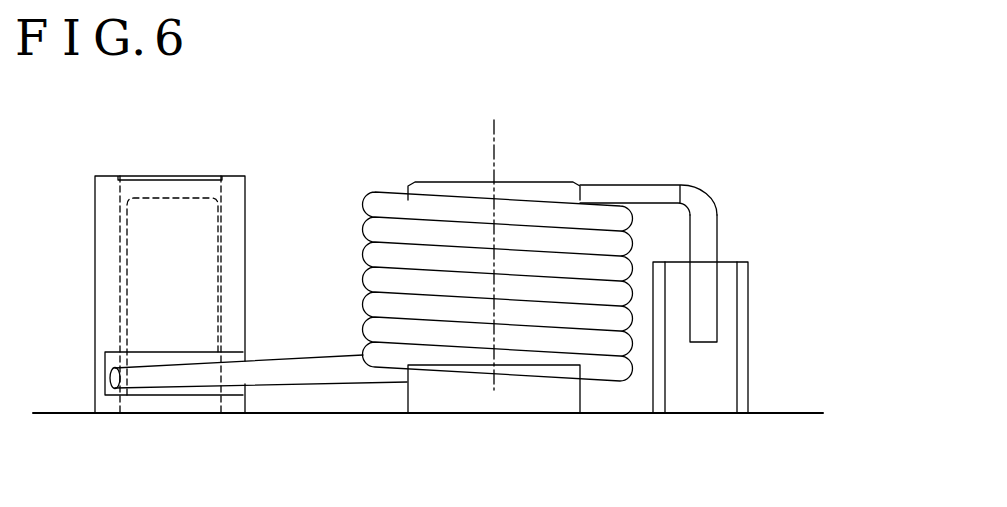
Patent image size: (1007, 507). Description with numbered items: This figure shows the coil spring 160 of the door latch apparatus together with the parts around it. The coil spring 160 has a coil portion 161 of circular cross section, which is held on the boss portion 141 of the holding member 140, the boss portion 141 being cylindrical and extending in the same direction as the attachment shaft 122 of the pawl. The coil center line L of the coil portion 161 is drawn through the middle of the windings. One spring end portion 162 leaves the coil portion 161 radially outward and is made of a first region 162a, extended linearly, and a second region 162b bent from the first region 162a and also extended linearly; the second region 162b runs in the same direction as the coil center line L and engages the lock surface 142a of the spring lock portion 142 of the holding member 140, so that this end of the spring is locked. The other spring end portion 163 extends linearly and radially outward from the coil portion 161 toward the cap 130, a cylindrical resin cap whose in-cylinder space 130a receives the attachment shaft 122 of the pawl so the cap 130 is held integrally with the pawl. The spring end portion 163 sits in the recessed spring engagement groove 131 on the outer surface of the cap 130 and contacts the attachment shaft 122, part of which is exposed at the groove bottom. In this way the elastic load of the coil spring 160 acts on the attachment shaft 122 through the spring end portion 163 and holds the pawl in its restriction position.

The attachment shaft 122 is at (130, 283).
The cap 130 is at (149, 264).
The in-cylinder space 130a is at (219, 182).
The spring engagement groove 131 is at (240, 357).
The holding member 140 is at (798, 409).
The boss portion 141 is at (463, 392).
The spring lock portion 142 is at (706, 358).
The lock surface 142a is at (668, 358).
The coil spring 160 is at (462, 252).
The coil portion 161 is at (368, 253).
The spring end portion 162 is at (741, 260).
The first region 162a is at (650, 190).
The second region 162b is at (703, 290).
The spring end portion 163 is at (293, 377).
The coil center line L is at (497, 153).